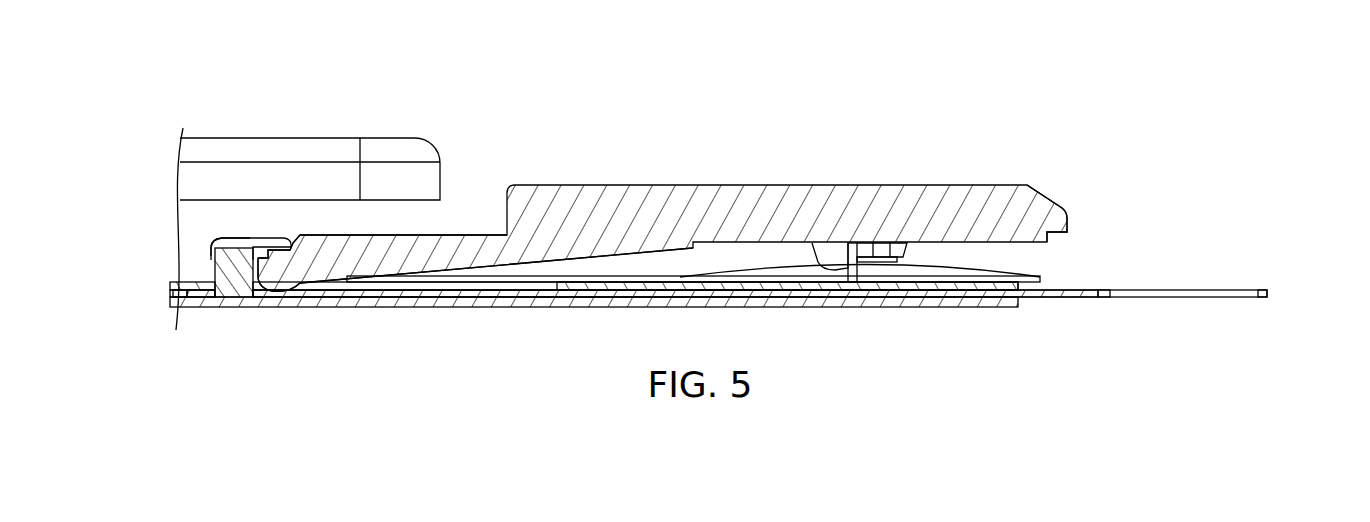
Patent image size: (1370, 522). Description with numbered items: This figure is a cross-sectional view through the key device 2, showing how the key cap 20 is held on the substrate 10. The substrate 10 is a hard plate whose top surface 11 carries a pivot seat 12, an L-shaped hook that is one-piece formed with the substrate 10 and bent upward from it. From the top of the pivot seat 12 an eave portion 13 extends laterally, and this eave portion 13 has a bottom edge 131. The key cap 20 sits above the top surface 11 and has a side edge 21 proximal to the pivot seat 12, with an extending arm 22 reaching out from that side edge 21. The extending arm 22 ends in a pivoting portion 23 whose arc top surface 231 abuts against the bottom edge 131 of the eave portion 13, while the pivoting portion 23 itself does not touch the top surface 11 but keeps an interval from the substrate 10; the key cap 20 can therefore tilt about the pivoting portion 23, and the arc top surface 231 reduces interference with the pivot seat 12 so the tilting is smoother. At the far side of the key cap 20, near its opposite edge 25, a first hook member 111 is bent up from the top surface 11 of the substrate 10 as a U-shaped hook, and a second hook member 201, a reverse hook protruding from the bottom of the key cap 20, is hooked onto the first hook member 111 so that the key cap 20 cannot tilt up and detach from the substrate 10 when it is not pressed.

The key device 2 is at (705, 225).
The substrate 10 is at (1268, 296).
The top surface 11 is at (1090, 290).
The pivot seat 12 is at (213, 267).
The eave portion 13 is at (272, 240).
The bottom edge 131 is at (250, 242).
The key cap 20 is at (322, 138).
The side edge 21 is at (507, 215).
The extending arm 22 is at (362, 272).
The pivoting portion 23 is at (297, 292).
The arc top surface 231 is at (290, 244).
The opposite edge 25 is at (1062, 200).
The second hook member 201 is at (838, 252).
The first hook member 111 is at (855, 262).